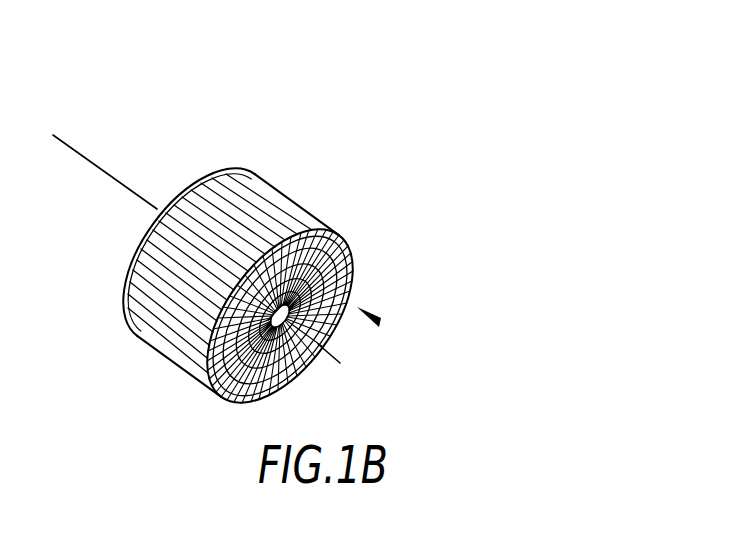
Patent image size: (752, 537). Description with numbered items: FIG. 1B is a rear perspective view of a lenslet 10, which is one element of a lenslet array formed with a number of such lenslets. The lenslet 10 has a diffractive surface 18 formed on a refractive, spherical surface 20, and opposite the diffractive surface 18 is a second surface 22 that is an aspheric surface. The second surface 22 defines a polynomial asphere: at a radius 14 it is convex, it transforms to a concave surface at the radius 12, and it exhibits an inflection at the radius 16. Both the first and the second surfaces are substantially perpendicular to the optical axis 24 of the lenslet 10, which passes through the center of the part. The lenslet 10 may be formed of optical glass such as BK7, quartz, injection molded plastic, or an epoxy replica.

The lenslet 10 is at (366, 78).
The radius 12 is at (348, 266).
The radius 14 is at (200, 328).
The radius 16 is at (338, 235).
The diffractive surface 18 is at (127, 257).
The spherical surface 20 is at (184, 186).
The second surface 22 is at (380, 322).
The optical axis 24 is at (82, 150).